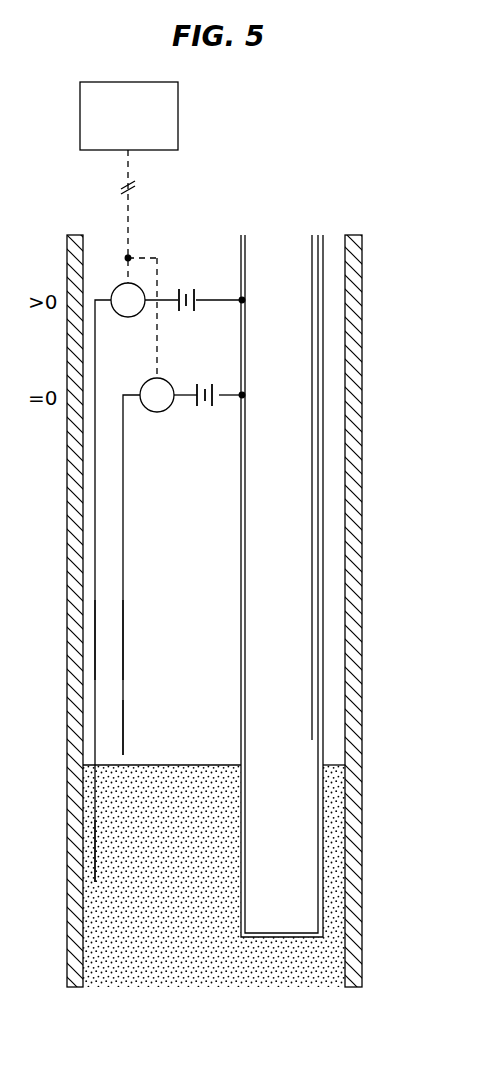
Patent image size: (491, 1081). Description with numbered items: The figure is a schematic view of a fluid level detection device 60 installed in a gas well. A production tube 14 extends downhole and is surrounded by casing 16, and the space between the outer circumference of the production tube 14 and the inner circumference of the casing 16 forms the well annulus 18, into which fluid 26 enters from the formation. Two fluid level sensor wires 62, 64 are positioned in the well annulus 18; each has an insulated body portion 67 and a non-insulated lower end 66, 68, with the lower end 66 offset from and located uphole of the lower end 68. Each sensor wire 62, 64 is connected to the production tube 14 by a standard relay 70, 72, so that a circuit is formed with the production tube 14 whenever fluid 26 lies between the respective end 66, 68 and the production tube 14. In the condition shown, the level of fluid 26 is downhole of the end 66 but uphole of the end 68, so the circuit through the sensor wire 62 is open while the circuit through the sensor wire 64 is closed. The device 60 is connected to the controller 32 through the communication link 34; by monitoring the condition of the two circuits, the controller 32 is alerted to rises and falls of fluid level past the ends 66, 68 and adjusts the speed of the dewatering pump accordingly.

The production tube 14 is at (293, 594).
The casing 16 is at (362, 328).
The well annulus 18 is at (343, 499).
The fluid 26 is at (181, 834).
The controller 32 is at (141, 128).
The communication link 34 is at (126, 218).
The fluid level detection device 60 is at (275, 160).
The fluid level sensor wire 62 is at (136, 594).
The fluid level sensor wire 64 is at (84, 571).
The lower end 66 is at (125, 740).
The insulated body portion 67 is at (123, 650).
The lower end 68 is at (84, 871).
The relay 70 is at (203, 428).
The relay 72 is at (180, 274).